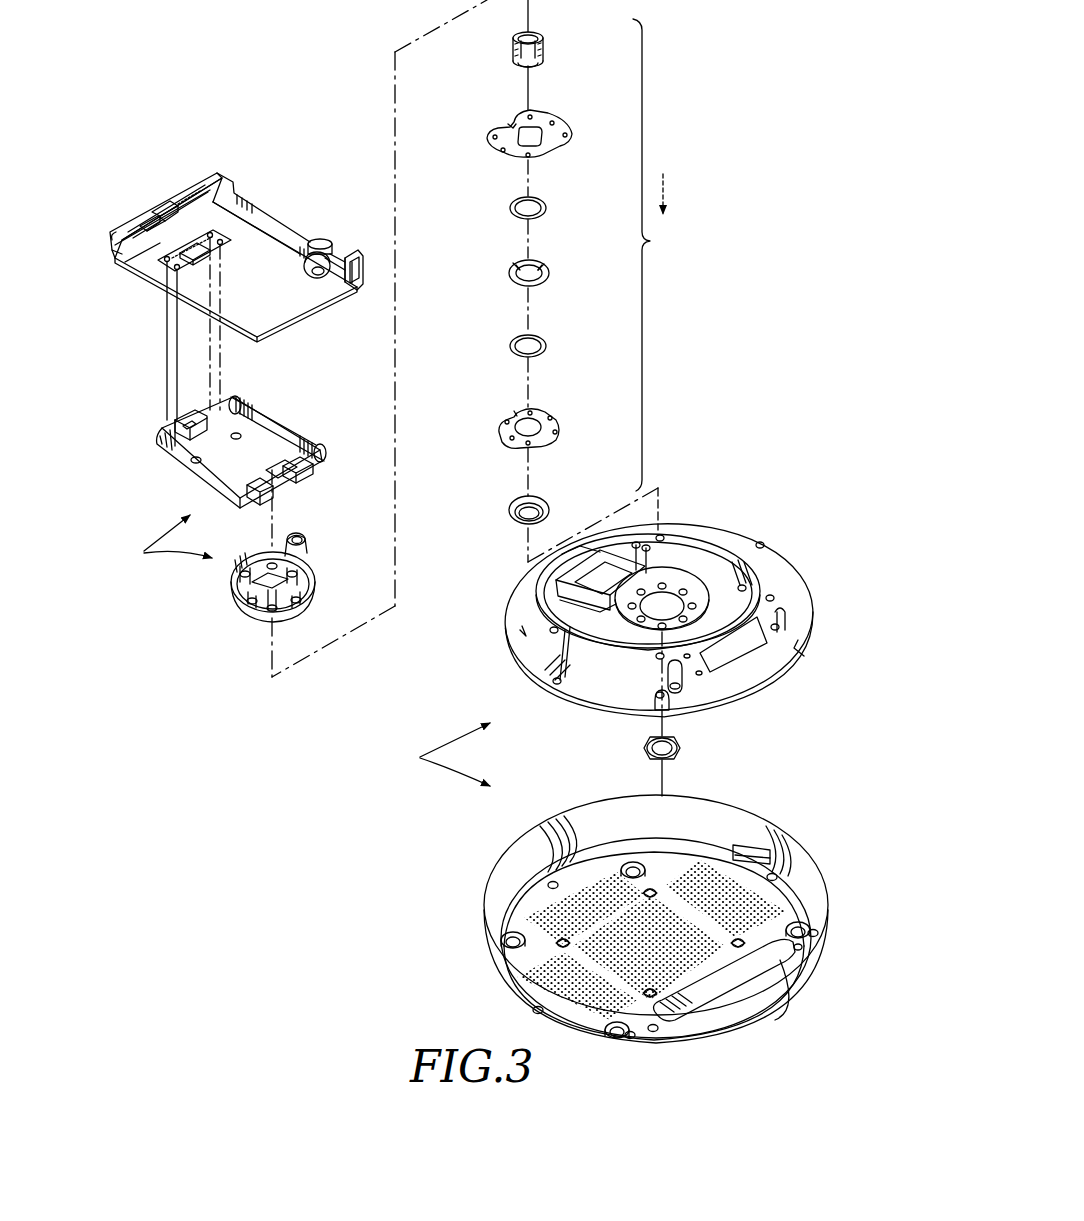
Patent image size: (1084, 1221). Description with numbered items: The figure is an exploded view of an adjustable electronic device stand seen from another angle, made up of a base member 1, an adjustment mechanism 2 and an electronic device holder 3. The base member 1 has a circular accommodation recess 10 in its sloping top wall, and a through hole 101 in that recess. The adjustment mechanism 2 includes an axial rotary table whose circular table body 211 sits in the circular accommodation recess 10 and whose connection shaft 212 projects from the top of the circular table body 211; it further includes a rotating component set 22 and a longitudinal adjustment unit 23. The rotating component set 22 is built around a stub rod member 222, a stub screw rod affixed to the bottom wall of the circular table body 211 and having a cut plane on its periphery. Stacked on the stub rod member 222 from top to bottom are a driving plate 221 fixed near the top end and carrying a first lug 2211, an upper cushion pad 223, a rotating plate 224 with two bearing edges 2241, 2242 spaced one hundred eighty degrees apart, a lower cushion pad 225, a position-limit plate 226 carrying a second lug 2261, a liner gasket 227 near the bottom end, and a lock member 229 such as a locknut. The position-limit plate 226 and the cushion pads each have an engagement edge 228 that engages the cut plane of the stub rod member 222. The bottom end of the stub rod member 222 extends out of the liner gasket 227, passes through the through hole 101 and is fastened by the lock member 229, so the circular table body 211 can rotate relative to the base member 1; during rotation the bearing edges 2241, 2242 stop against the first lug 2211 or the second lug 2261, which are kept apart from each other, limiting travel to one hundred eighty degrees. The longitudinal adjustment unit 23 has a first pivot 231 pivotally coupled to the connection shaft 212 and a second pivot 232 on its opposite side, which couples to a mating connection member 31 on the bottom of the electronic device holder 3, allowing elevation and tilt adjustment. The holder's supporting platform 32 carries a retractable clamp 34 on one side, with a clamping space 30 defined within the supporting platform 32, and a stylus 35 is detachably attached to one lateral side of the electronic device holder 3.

The base member 1 is at (613, 883).
The circular accommodation recess 10 is at (659, 621).
The through hole 101 is at (655, 620).
The adjustment mechanism 2 is at (392, 358).
The rotating component set 22 is at (655, 255).
The longitudinal adjustment unit 23 is at (310, 407).
The circular table body 211 is at (310, 572).
The connection shaft 212 is at (305, 545).
The driving plate 221 is at (497, 143).
The first lug 2211 is at (512, 126).
The stub rod member 222 is at (539, 37).
The upper cushion pad 223 is at (510, 206).
The rotating plate 224 is at (522, 284).
The bearing edge 2241 is at (514, 265).
The bearing edge 2242 is at (546, 278).
The lower cushion pad 225 is at (510, 344).
The position-limit plate 226 is at (500, 432).
The second lug 2261 is at (514, 414).
The liner gasket 227 is at (508, 513).
The engagement edge 228 is at (516, 46).
The lock member 229 is at (683, 748).
The first pivot 231 is at (303, 474).
The second pivot 232 is at (178, 443).
The electronic device holder 3 is at (222, 152).
The clamping space 30 is at (237, 216).
The mating connection member 31 is at (172, 250).
The supporting platform 32 is at (292, 232).
The retractable clamp 34 is at (351, 262).
The stylus 35 is at (172, 203).